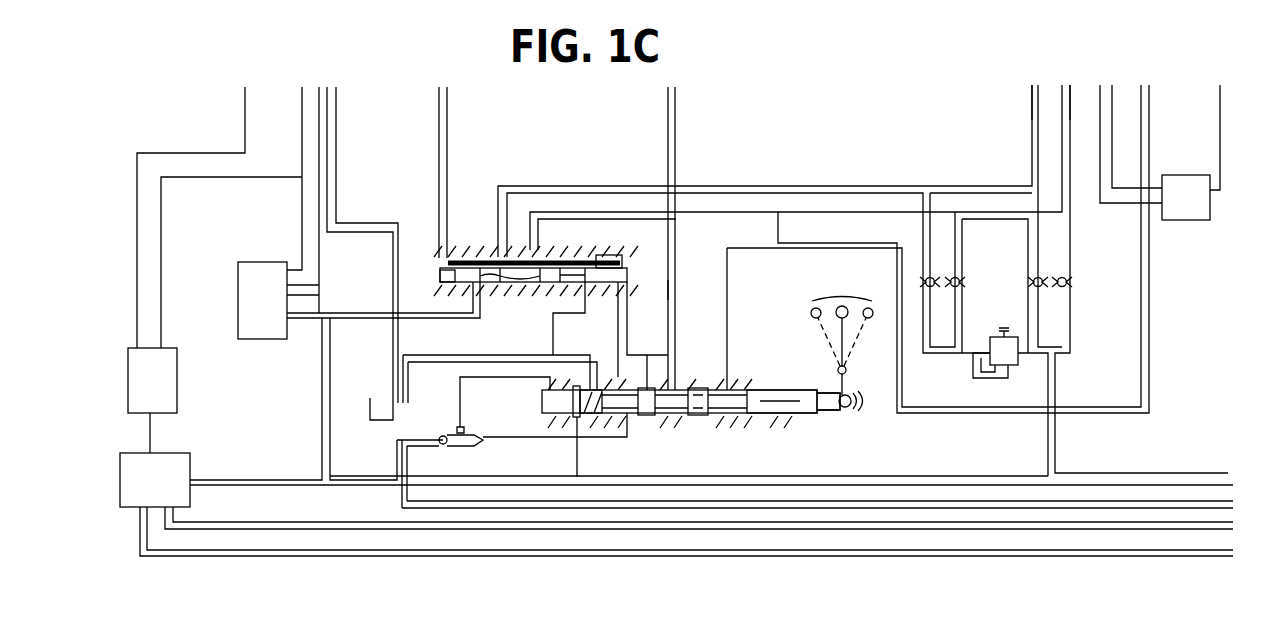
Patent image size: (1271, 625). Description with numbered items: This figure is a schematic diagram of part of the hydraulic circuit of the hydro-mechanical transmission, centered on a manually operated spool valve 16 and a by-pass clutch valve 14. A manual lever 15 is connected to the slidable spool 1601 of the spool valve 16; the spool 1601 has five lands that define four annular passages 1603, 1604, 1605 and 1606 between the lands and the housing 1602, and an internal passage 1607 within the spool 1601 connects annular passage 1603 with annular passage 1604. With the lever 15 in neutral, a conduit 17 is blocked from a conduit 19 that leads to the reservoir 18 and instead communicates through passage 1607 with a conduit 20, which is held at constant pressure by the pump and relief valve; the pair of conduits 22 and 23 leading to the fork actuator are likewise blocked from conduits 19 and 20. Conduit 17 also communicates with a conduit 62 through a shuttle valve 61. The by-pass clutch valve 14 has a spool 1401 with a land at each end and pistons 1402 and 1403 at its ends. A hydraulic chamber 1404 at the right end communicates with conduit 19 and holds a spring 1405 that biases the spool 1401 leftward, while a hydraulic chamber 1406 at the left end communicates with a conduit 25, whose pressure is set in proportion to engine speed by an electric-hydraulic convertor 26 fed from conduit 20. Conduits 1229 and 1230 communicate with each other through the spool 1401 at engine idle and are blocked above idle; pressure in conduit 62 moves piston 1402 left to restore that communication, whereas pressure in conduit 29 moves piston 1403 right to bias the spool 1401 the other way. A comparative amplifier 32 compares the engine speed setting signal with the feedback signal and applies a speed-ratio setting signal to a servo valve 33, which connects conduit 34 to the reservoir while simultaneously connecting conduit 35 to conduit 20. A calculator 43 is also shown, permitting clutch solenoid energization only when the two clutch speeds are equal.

The by-pass clutch valve 14 is at (540, 298).
The manual lever 15 is at (838, 346).
The spool valve 16 is at (769, 376).
The conduit 17 is at (640, 430).
The reservoir 18 is at (418, 417).
The conduit 19 is at (468, 355).
The conduit 20 is at (375, 478).
The conduit 22 is at (668, 290).
The conduit 23 is at (727, 290).
The conduit 25 is at (367, 313).
The electric-hydraulic convertor 26 is at (238, 306).
The conduit 29 is at (442, 262).
The comparative amplifier 32 is at (177, 383).
The servo valve 33 is at (190, 462).
The conduit 34 is at (370, 527).
The conduit 35 is at (330, 550).
The calculator 43 is at (1185, 220).
The shuttle valve 61 is at (479, 437).
The conduit 62 is at (500, 378).
The conduit 1229 is at (1032, 147).
The conduit 1230 is at (1070, 193).
The spool 1401 is at (560, 247).
The piston 1402 is at (633, 262).
The piston 1403 is at (448, 284).
The hydraulic chamber 1404 is at (588, 300).
The spring 1405 is at (612, 247).
The hydraulic chamber 1406 is at (508, 284).
The spool 1601 is at (808, 415).
The housing 1602 is at (773, 417).
The annular passage 1603 is at (583, 415).
The annular passage 1604 is at (656, 417).
The annular passage 1605 is at (703, 417).
The annular passage 1606 is at (712, 417).
The internal passage 1607 is at (579, 418).